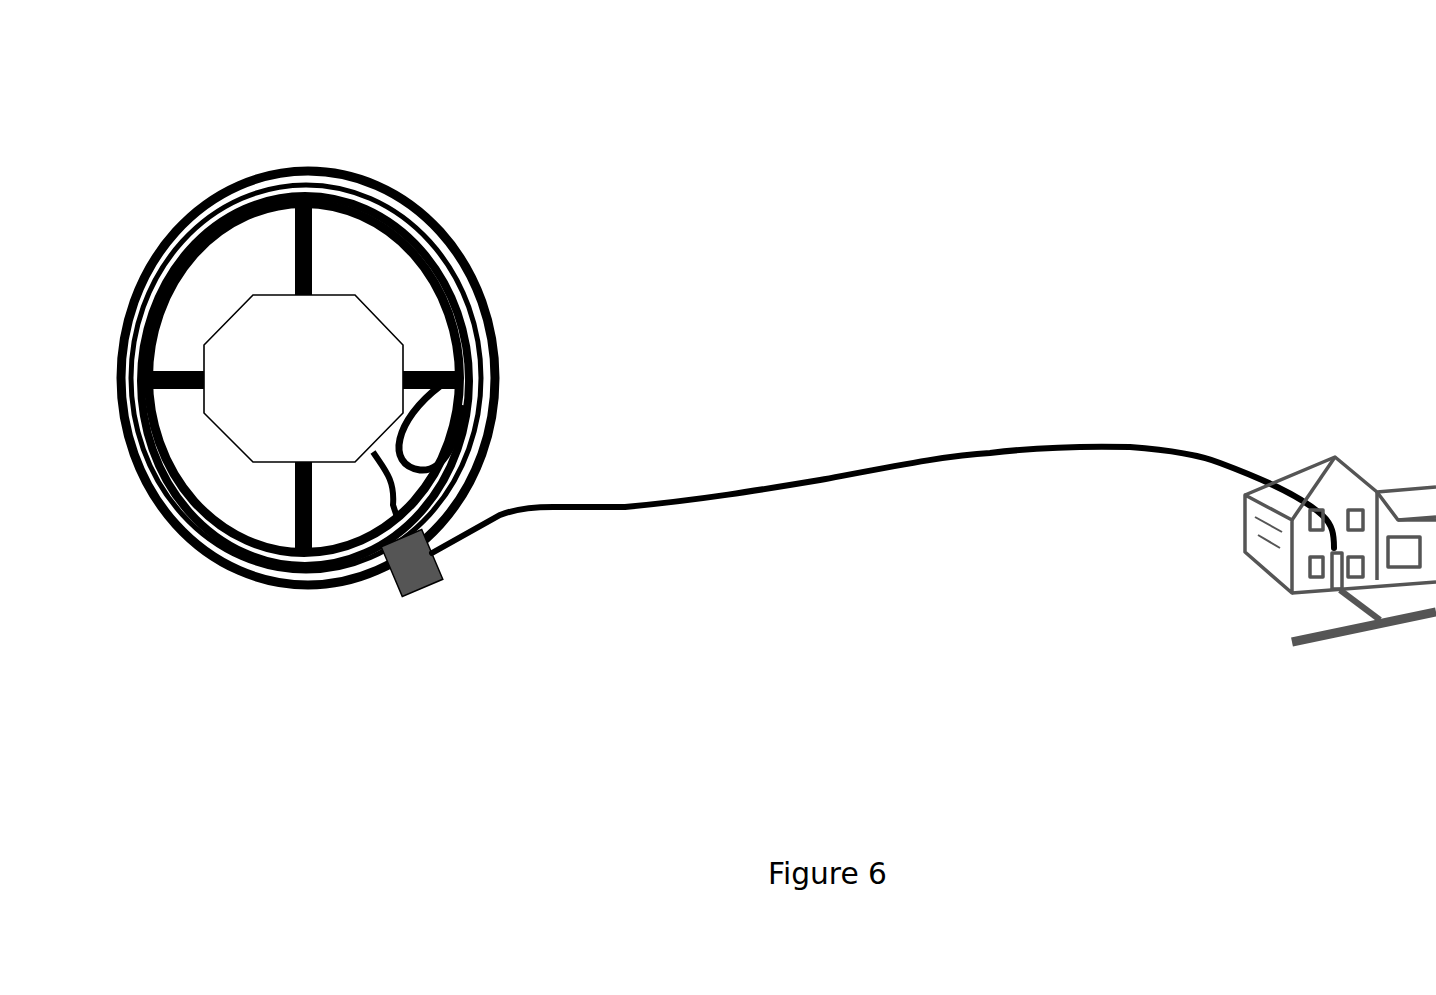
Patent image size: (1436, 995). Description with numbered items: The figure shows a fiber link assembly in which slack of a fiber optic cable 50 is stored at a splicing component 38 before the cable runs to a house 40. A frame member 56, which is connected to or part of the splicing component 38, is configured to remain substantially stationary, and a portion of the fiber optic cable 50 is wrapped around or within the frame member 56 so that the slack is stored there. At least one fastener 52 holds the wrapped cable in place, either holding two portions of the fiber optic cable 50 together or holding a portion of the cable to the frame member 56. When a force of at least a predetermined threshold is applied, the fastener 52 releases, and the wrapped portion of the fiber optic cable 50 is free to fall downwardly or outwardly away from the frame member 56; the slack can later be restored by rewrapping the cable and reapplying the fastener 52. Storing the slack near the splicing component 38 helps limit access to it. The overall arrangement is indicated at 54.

The splicing component 38 is at (287, 396).
The house 40 is at (1372, 523).
The fiber optic cable 50 is at (989, 460).
The fastener 52 is at (427, 562).
The cable reel assembly 54 is at (536, 227).
The frame member 56 is at (348, 193).